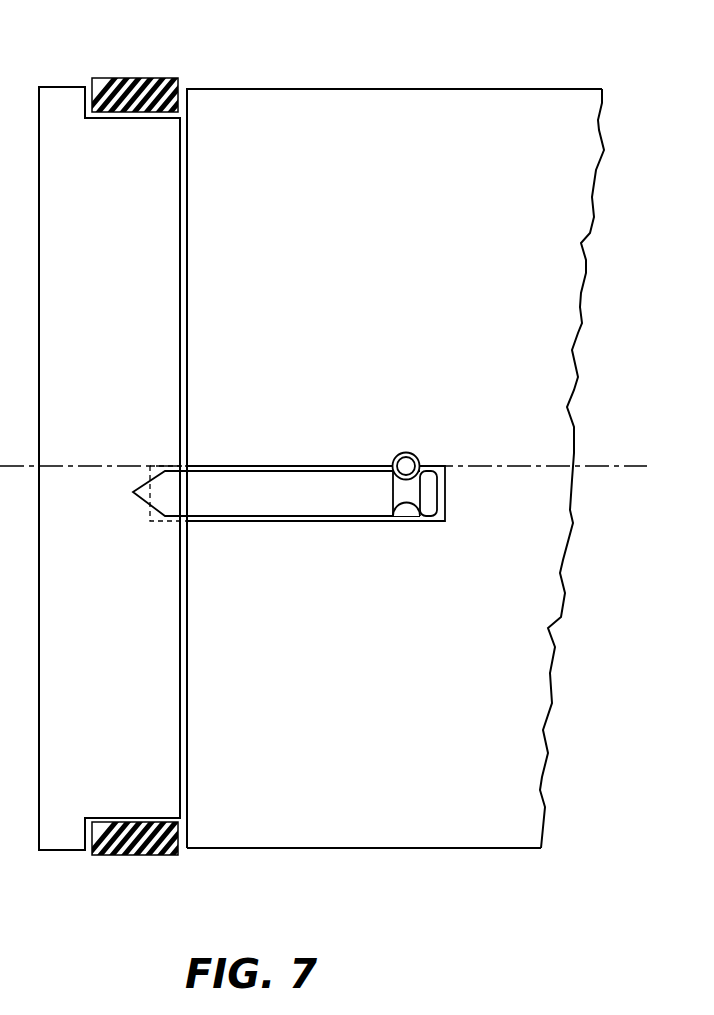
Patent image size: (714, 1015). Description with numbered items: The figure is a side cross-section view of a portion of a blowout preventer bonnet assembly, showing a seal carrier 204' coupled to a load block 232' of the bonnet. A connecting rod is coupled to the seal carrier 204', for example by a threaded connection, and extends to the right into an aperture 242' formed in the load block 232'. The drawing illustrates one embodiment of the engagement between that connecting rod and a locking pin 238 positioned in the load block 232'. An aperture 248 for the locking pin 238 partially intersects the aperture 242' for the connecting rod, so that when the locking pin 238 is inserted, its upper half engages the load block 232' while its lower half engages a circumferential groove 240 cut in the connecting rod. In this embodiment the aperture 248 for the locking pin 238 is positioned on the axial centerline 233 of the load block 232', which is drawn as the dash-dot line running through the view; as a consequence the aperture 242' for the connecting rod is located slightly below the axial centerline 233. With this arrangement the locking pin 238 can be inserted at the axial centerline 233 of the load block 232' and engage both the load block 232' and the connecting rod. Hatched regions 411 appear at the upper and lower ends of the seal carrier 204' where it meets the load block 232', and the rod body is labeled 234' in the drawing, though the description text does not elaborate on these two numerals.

The seal carrier 204' is at (109, 468).
The load block 232' is at (394, 468).
The axial centerline 233 is at (593, 466).
The aperture 242' is at (297, 463).
The pin 234' is at (263, 526).
The aperture 248 is at (406, 452).
The locking pin 238 is at (410, 477).
The circumferential groove 240 is at (405, 508).
The seal 411 is at (127, 92).